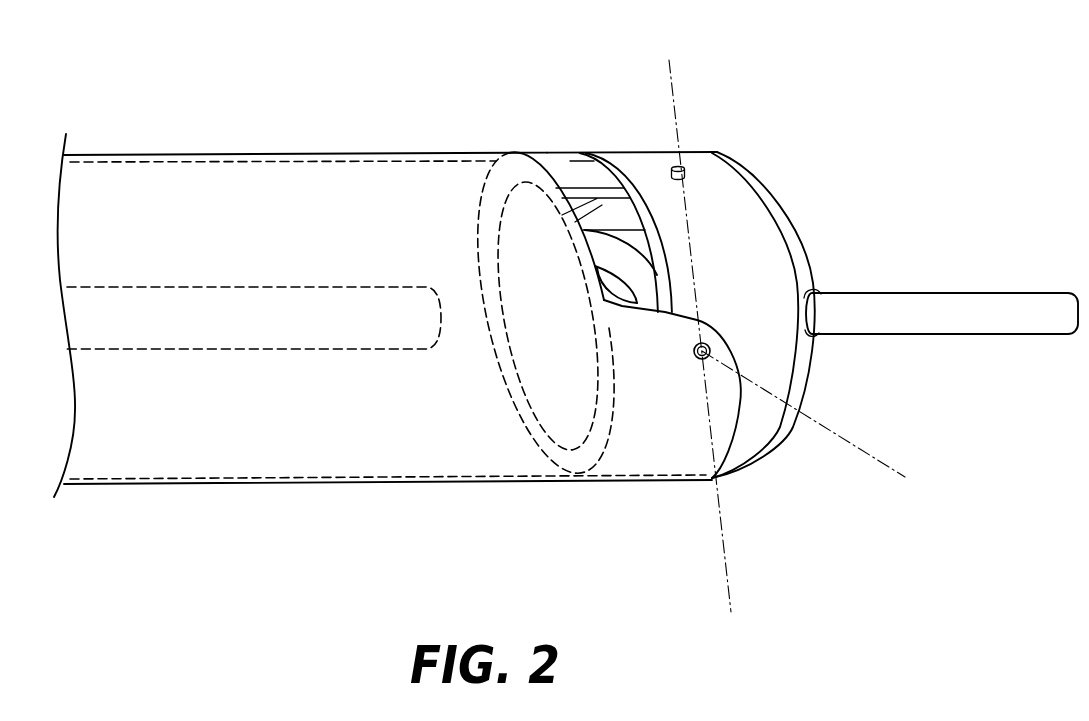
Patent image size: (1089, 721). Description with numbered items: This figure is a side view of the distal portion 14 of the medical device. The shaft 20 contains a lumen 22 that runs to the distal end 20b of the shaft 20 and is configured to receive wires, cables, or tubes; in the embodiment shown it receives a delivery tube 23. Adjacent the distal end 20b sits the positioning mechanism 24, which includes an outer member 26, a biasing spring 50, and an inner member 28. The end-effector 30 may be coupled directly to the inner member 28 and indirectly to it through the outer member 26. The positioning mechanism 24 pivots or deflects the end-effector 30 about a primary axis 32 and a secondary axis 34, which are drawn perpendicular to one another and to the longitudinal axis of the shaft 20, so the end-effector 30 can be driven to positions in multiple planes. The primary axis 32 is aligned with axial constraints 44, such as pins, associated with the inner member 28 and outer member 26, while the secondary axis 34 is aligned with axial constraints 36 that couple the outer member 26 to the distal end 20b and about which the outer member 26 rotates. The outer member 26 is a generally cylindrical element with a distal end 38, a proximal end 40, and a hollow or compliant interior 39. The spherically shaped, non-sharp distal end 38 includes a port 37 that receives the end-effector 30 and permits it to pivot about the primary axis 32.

The distal portion 14 is at (112, 99).
The shaft 20 is at (263, 153).
The distal end of shaft 20b is at (714, 481).
The lumen 22 is at (128, 161).
The delivery tube 23 is at (306, 287).
The positioning mechanism 24 is at (638, 139).
The outer member 26 is at (692, 152).
The inner member 28 is at (594, 238).
The end-effector 30 is at (957, 293).
The primary axis 32 is at (704, 353).
The secondary axis 34 is at (821, 426).
The axial constraints 36 is at (694, 355).
The port 37 is at (821, 289).
The distal end of outer member 38 is at (781, 206).
The hollow or compliant interior 39 is at (588, 172).
The proximal end of outer member 40 is at (661, 264).
The axial constraints 44 is at (686, 174).
The biasing spring 50 is at (488, 167).